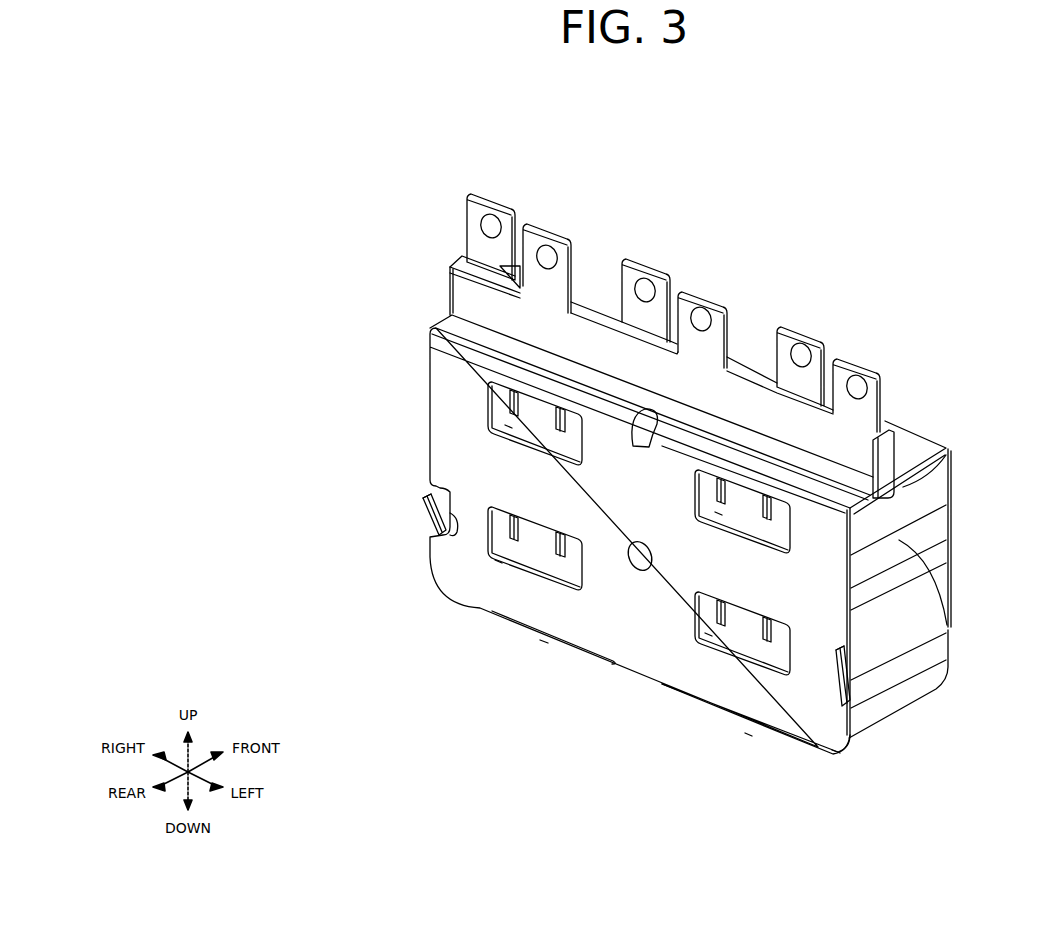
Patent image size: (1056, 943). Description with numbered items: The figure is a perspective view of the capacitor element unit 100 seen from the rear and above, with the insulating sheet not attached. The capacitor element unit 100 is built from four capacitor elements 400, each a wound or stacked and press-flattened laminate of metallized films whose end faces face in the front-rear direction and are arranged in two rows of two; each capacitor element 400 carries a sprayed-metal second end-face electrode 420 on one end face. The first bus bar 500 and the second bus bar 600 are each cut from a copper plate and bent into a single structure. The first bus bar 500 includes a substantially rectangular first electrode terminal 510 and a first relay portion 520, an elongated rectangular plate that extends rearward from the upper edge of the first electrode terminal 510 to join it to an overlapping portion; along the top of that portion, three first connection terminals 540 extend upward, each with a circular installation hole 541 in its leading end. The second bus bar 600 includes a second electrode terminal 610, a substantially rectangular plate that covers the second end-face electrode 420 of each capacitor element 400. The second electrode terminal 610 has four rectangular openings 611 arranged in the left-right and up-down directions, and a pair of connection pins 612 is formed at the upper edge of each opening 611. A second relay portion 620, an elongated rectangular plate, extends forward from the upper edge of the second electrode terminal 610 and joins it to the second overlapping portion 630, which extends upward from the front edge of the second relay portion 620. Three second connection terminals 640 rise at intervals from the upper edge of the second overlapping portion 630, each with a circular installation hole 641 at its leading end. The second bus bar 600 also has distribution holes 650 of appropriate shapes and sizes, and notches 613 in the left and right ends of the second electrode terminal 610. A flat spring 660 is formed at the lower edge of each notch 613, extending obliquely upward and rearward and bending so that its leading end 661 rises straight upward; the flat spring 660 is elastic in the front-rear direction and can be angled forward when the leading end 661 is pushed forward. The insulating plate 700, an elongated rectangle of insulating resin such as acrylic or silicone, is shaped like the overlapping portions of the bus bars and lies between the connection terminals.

The capacitor element unit 100 is at (838, 222).
The capacitor element 400 is at (545, 641).
The second end-face electrode 420 is at (505, 425).
The first bus bar 500 is at (943, 504).
The first electrode terminal 510 is at (955, 540).
The first relay portion 520 is at (880, 432).
The first connection terminal 540 is at (487, 195).
The installation hole 541 is at (480, 222).
The second bus bar 600 is at (610, 493).
The second electrode terminal 610 is at (442, 448).
The opening 611 is at (488, 400).
The connection pin 612 is at (560, 432).
The notch 613 is at (432, 537).
The second relay portion 620 is at (452, 317).
The second overlapping portion 630 is at (456, 280).
The second connection terminal 640 is at (540, 230).
The installation hole 641 is at (543, 272).
The distribution hole 650 is at (638, 447).
The flat spring 660 is at (423, 528).
The leading end 661 is at (426, 497).
The insulating plate 700 is at (742, 366).